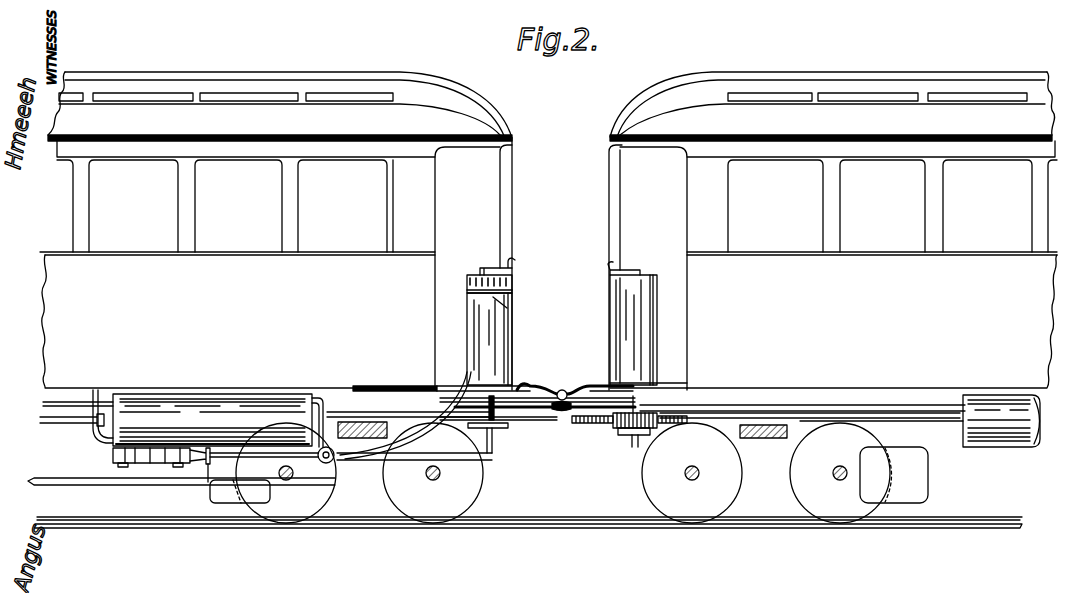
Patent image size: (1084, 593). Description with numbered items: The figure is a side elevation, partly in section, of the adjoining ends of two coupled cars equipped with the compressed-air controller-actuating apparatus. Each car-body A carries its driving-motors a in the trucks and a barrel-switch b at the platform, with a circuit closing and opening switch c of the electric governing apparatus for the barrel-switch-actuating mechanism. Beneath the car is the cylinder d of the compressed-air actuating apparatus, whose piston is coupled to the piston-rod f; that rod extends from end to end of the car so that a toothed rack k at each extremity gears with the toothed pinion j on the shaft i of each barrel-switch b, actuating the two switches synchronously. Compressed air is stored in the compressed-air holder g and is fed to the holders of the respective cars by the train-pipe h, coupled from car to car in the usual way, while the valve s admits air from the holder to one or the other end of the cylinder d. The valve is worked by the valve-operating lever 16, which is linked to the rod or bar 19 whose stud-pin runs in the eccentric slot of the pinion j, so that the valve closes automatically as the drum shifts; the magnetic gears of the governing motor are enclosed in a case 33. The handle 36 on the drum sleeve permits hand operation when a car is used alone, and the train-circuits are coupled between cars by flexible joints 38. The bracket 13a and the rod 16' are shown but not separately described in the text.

The car-body A is at (330, 340).
The driving-motors a is at (210, 496).
The barrel-switches b is at (467, 342).
The circuit closing and opening switch c is at (467, 282).
The cylinder d is at (209, 412).
The piston-rod f is at (80, 420).
The compressed-air holder g is at (1012, 447).
The train-pipe h is at (43, 404).
The shaft i is at (520, 384).
The toothed pinion j is at (498, 428).
The toothed rack k is at (557, 421).
The valve s is at (331, 464).
The bracket 13a is at (496, 268).
The valve-operating lever 16 is at (563, 473).
The connecting rod 16' is at (263, 467).
The rod or bar 19 is at (494, 455).
The case 33 is at (113, 455).
The handle 36 is at (631, 270).
The flexible joints 38 is at (562, 389).